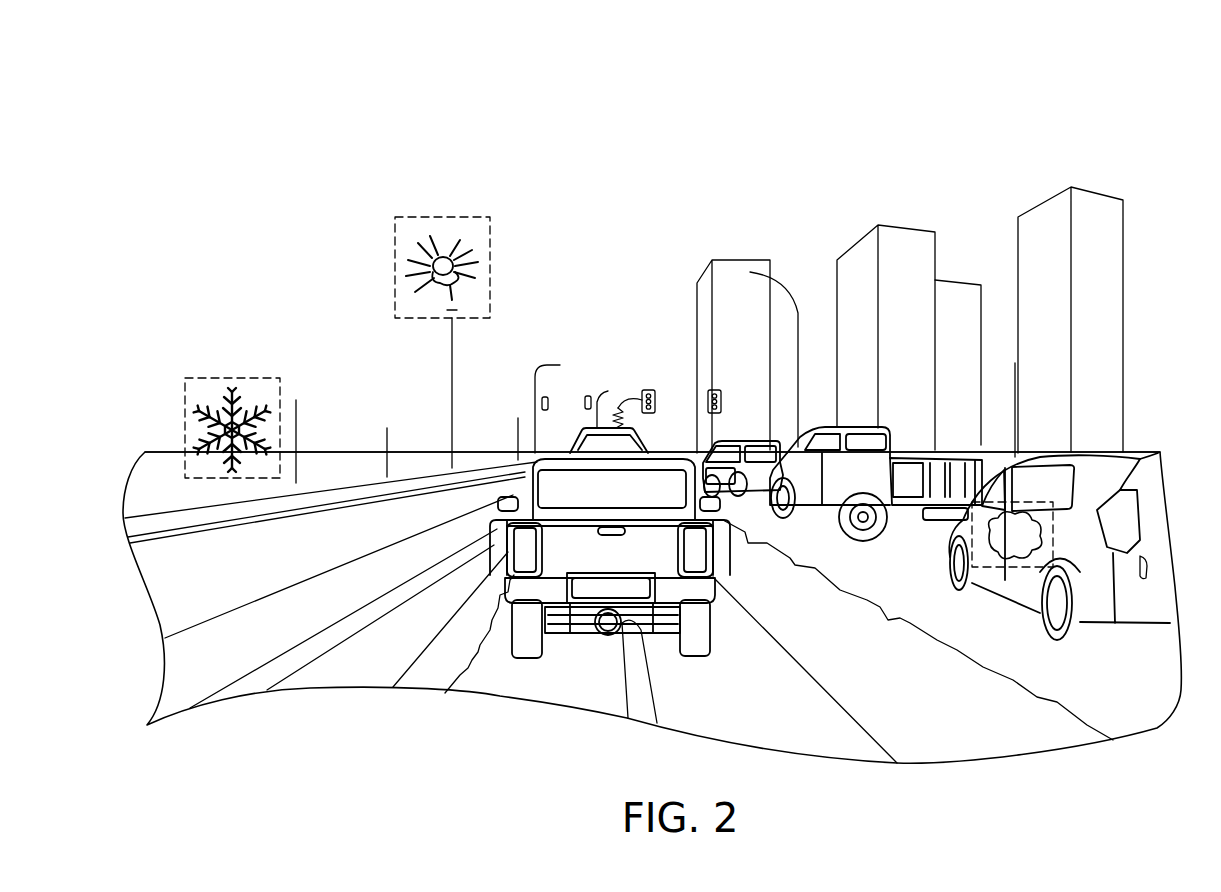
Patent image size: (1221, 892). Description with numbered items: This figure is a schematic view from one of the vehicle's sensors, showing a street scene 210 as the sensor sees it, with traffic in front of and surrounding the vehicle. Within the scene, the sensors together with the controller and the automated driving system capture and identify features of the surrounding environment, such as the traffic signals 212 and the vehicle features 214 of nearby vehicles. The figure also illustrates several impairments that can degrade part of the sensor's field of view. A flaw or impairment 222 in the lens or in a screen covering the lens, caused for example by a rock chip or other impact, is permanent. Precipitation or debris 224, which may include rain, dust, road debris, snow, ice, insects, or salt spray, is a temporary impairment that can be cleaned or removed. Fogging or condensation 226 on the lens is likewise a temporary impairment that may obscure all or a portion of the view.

The street scene 210 is at (1036, 116).
The traffic signals 212 is at (712, 390).
The vehicle features 214 is at (543, 553).
The flaw or impairment 222 is at (490, 228).
The precipitation or debris 224 is at (280, 385).
The fogging or condensation 226 is at (995, 573).